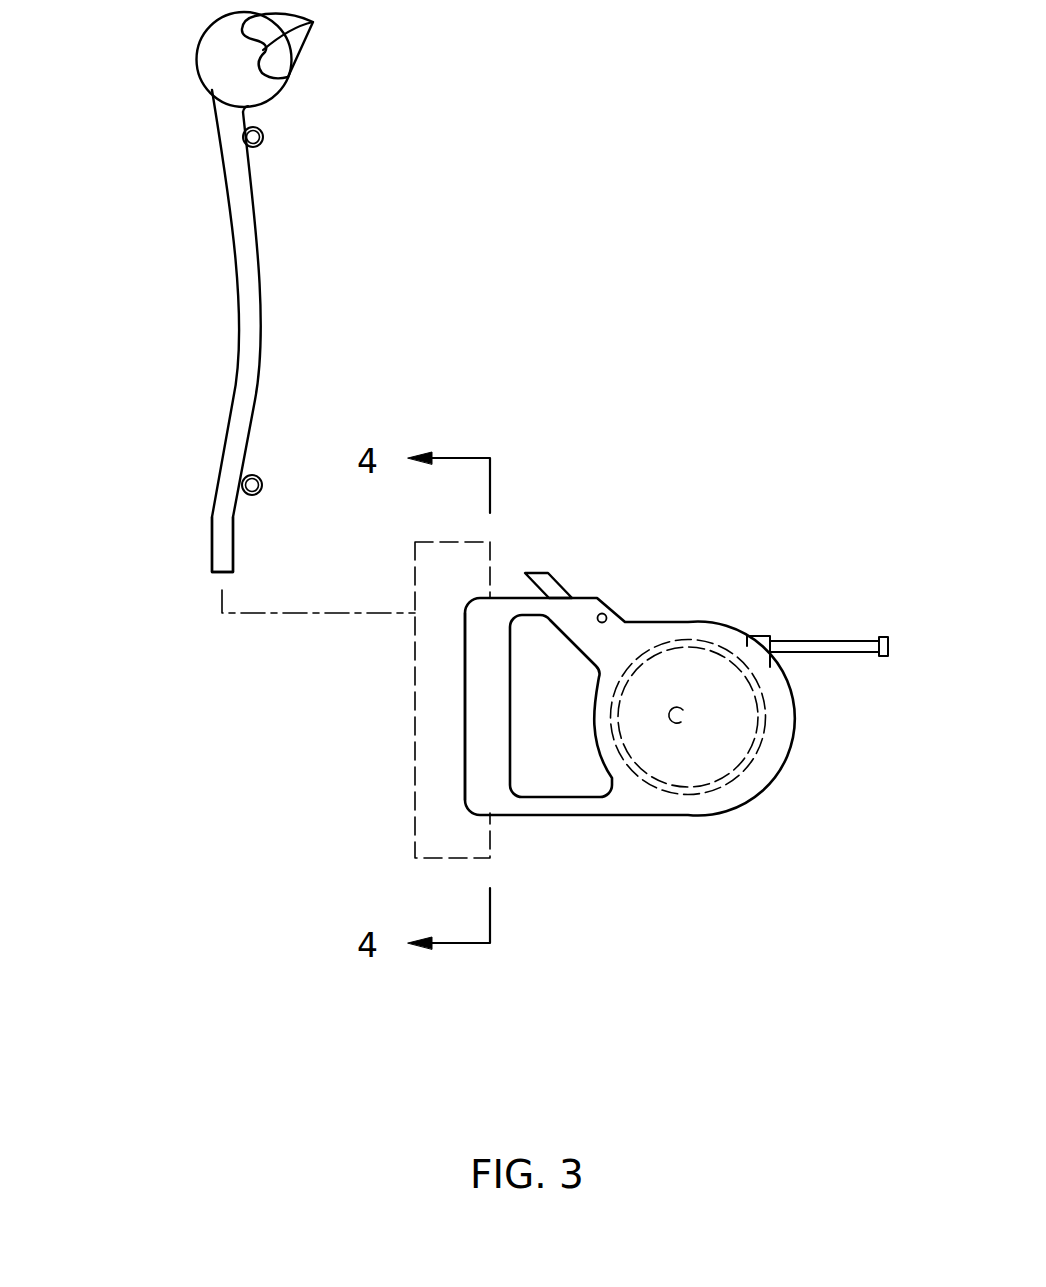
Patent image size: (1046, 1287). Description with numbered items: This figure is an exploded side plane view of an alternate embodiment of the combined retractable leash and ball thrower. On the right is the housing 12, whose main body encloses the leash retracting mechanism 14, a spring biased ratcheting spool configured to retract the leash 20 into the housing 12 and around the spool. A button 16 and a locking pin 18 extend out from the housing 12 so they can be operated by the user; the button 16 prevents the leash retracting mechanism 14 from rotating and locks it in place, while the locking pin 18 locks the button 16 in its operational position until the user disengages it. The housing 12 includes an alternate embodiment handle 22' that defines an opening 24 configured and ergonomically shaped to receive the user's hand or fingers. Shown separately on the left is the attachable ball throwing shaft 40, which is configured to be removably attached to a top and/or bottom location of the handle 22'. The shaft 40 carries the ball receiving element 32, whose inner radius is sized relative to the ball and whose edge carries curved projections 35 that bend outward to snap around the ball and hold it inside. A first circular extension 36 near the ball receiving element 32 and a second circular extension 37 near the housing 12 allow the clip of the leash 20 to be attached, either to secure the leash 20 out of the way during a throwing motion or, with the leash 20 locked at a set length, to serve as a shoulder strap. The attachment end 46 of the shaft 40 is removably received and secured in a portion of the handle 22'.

The housing 12 is at (658, 622).
The leash retracting mechanism 14 is at (763, 737).
The button 16 is at (537, 570).
The locking pin 18 is at (603, 613).
The leash 20 is at (827, 642).
The handle 22' is at (356, 700).
The opening 24 is at (552, 737).
The ball receiving element 32 is at (198, 50).
The projections 35 is at (313, 22).
The circular extension 36 is at (257, 146).
The second circular extension 37 is at (257, 495).
The ball throwing shaft 40 is at (238, 278).
The attachment end 46 is at (212, 543).